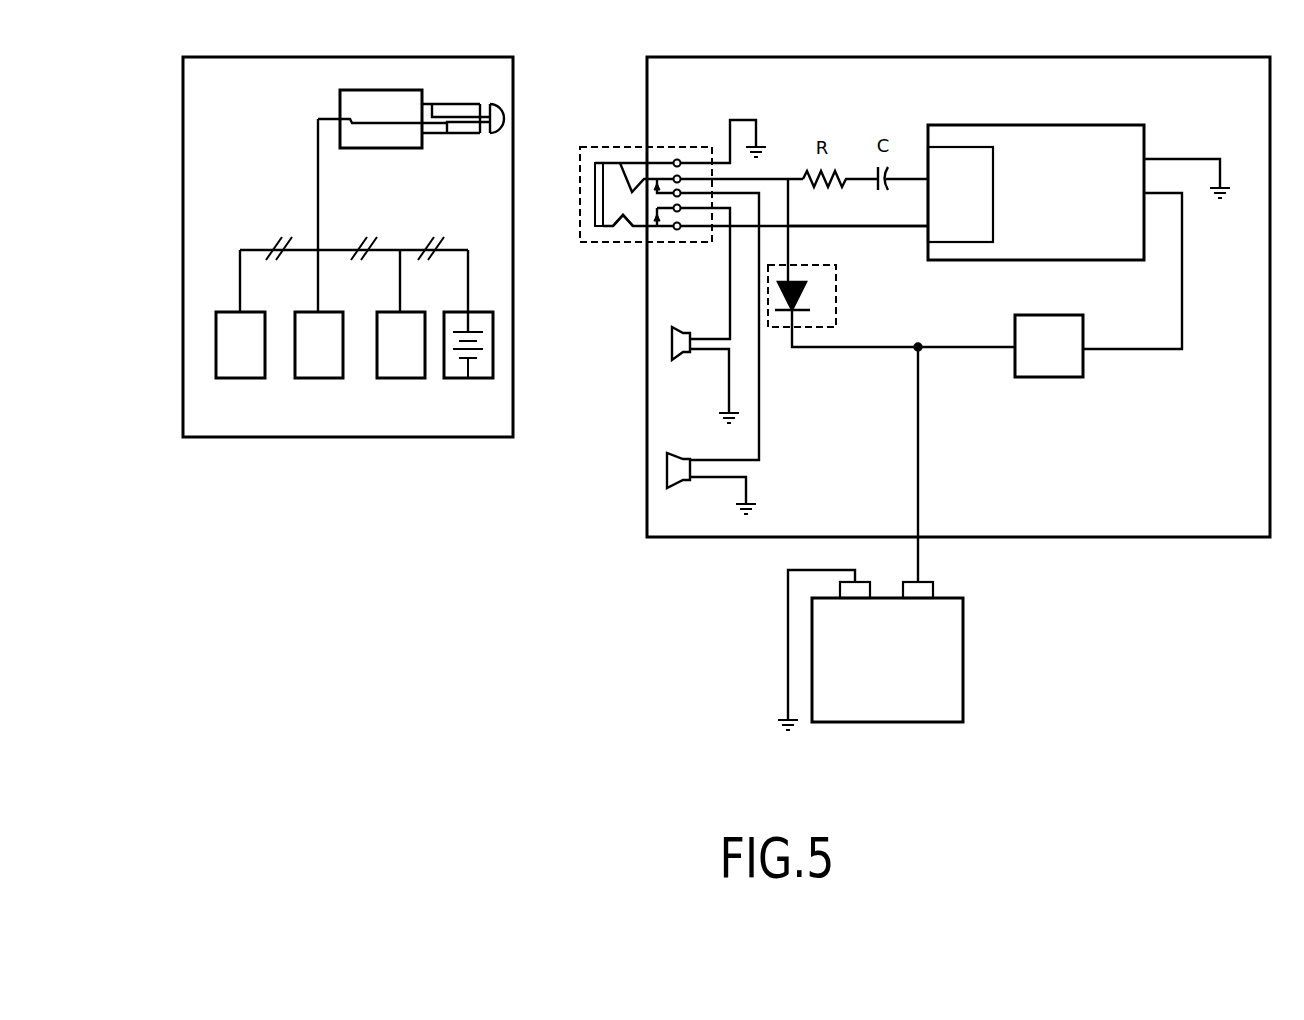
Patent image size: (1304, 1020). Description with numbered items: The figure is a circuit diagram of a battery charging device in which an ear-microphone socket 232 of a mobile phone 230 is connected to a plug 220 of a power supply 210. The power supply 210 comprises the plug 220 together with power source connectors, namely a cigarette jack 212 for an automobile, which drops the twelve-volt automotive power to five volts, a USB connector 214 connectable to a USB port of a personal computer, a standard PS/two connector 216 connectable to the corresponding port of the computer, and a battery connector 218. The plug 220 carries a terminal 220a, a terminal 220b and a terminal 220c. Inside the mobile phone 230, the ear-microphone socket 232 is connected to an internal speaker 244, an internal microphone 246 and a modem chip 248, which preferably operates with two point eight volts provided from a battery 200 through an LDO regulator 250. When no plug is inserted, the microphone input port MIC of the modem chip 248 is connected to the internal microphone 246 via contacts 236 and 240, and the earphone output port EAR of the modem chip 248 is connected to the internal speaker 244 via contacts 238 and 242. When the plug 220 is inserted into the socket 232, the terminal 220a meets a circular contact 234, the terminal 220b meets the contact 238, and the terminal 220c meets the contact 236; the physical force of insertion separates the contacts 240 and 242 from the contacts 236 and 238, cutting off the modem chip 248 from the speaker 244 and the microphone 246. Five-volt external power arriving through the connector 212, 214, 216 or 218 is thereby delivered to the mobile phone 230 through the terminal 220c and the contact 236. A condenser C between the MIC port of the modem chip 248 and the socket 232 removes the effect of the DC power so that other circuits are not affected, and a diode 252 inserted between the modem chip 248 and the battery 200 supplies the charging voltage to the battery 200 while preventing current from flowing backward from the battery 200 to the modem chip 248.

The battery 200 is at (963, 658).
The power supply 210 is at (347, 440).
The cigarette jack 212 is at (265, 307).
The USB connector 214 is at (341, 307).
The PS/2 connector 216 is at (425, 307).
The battery connector 218 is at (493, 307).
The ear-microphone plug 220 is at (380, 148).
The terminal 220a is at (455, 133).
The terminal 220b is at (487, 133).
The terminal 220c is at (505, 128).
The mobile phone 230 is at (956, 57).
The ear-microphone socket 232 is at (580, 196).
The circular contact 234 is at (594, 163).
The contact 236 is at (622, 168).
The contact 238 is at (621, 228).
The contact 240 is at (657, 177).
The contact 242 is at (657, 228).
The internal speaker 244 is at (688, 331).
The internal microphone 246 is at (680, 453).
The modem chip 248 is at (1098, 125).
The LDO regulator 250 is at (1047, 315).
The diode 252 is at (836, 292).